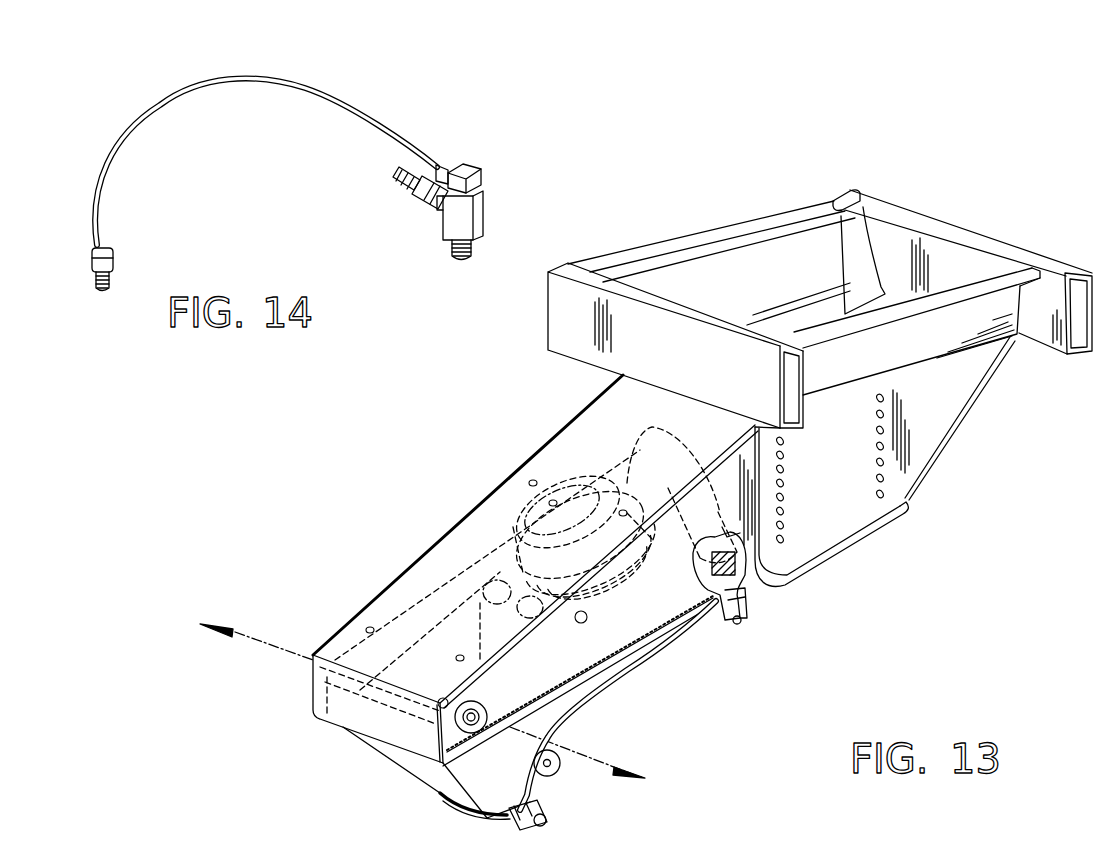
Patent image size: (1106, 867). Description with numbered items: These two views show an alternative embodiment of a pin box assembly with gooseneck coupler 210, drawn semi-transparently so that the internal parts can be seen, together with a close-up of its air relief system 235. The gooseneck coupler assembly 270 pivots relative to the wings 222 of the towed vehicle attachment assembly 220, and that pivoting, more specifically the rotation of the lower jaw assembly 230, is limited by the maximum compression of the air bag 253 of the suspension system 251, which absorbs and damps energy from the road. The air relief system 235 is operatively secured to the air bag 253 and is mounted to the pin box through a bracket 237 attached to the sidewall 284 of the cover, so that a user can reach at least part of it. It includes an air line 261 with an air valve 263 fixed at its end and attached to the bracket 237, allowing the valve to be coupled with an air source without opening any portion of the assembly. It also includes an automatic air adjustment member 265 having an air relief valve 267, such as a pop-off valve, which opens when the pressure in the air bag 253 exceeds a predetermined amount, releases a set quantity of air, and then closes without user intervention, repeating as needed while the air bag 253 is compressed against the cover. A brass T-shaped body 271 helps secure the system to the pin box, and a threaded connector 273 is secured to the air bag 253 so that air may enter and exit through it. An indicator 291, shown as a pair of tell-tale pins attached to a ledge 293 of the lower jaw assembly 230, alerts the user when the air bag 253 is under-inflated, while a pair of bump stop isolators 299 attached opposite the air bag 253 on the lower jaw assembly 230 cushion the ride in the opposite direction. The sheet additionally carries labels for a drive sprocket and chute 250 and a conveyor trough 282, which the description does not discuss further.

In FIG. 13, the pin box assembly with gooseneck coupler 210 is at (521, 356).
In FIG. 13, the towed vehicle attachment assembly 220 is at (951, 479).
In FIG. 13, the wings 222 is at (840, 313).
In FIG. 13, the lower jaw assembly 230 is at (377, 549).
In FIG. 14, the air relief system 235 is at (364, 100).
In FIG. 13, the air relief system 235 is at (693, 647).
In FIG. 13, the bracket 237 is at (745, 605).
In FIG. 13, the drive sprocket and chute 250 is at (440, 775).
In FIG. 13, the suspension system 251 is at (555, 458).
In FIG. 13, the air bag 253 is at (489, 535).
In FIG. 14, the air line 261 is at (207, 95).
In FIG. 14, the air valve 263 is at (112, 258).
In FIG. 13, the air valve 263 is at (738, 627).
In FIG. 14, the automatic air adjustment member 265 is at (498, 191).
In FIG. 14, the air relief valve 267 is at (411, 197).
In FIG. 13, the gooseneck coupler assembly 270 is at (558, 797).
In FIG. 14, the brass T-shaped body 271 is at (474, 217).
In FIG. 14, the threaded connector 273 is at (457, 258).
In FIG. 13, the conveyor trough 282 is at (603, 437).
In FIG. 13, the sidewall 284 is at (747, 570).
In FIG. 13, the indicator 291 is at (682, 483).
In FIG. 13, the ledge 293 is at (388, 623).
In FIG. 13, the bump stop isolators 299 is at (724, 532).